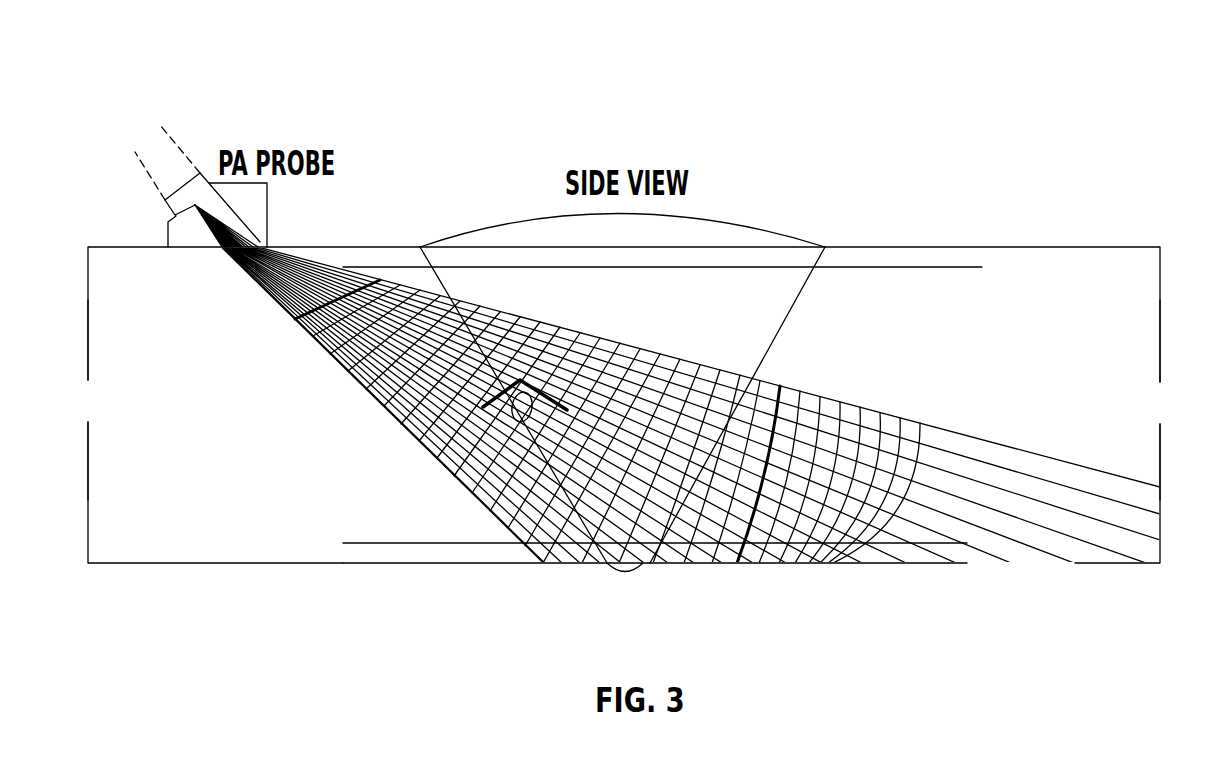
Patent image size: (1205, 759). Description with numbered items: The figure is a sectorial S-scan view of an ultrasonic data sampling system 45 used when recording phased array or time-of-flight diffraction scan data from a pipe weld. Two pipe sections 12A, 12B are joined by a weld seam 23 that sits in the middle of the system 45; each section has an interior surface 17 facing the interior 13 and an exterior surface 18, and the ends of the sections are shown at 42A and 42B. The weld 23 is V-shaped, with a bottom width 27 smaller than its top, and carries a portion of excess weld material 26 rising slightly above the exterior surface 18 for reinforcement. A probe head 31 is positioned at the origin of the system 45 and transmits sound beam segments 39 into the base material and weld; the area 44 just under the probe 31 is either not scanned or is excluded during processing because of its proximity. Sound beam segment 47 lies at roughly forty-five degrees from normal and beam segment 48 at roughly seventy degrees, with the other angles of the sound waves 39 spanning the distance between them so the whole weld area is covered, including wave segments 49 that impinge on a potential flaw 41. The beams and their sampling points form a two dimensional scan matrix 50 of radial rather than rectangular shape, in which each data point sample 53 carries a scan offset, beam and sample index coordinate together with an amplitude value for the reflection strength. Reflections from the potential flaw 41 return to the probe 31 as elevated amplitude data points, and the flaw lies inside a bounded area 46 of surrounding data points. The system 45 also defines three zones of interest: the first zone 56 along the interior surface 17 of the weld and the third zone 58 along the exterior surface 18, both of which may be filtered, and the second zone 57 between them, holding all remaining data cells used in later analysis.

The pipe section 12A is at (215, 411).
The pipe section 12B is at (917, 342).
The interior 13 is at (442, 608).
The interior surface 17 is at (192, 566).
The exterior surface 18 is at (893, 246).
The weld seam 23 is at (736, 210).
The excess weld material 26 is at (452, 237).
The bottom width 27 is at (609, 570).
The probe head 31 is at (209, 134).
The sound beam segments 39 is at (294, 355).
The potential weld defect 41 is at (538, 364).
The first pipe end 42A is at (90, 400).
The second pipe end 42B is at (1159, 400).
The area just under the probe 44 is at (247, 284).
The ultrasonic data sampling system 45 is at (861, 102).
The bounded area 46 is at (572, 381).
The sound beam segment 47 is at (460, 482).
The beam segment 48 is at (840, 412).
The wave segments 49 is at (420, 355).
The two dimensional scan matrix 50 is at (400, 471).
The data point sample 53 is at (784, 394).
The zone 1 56 is at (1086, 573).
The zone 2 57 is at (1071, 405).
The zone 3 58 is at (1090, 264).